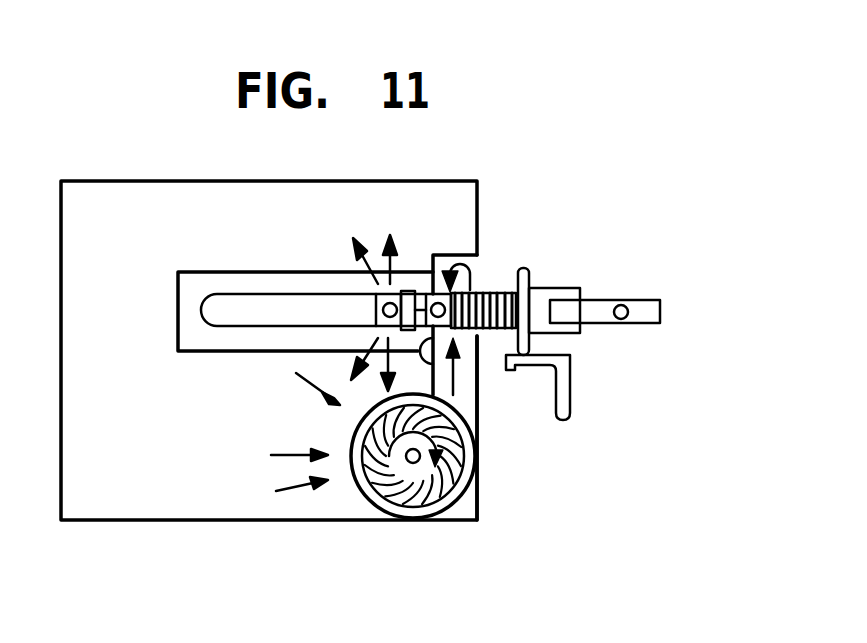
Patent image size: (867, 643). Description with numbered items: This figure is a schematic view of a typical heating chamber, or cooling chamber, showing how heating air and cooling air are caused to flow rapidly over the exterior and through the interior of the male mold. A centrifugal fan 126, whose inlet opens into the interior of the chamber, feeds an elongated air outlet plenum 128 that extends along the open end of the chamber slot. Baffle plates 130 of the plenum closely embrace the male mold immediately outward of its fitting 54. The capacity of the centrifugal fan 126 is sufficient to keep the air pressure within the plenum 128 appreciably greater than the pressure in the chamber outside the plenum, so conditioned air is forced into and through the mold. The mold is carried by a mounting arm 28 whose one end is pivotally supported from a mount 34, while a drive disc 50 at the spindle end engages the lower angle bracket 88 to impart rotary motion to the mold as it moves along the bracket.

The baffle plates 130 is at (436, 259).
The fitting 54 is at (450, 295).
The drive disc 50 is at (535, 286).
The mounting arm 28 is at (605, 303).
The mount 34 is at (652, 303).
The second lower angle bracket 88 is at (572, 404).
The air outlet plenum 128 is at (466, 388).
The centrifugal fan 126 is at (373, 503).